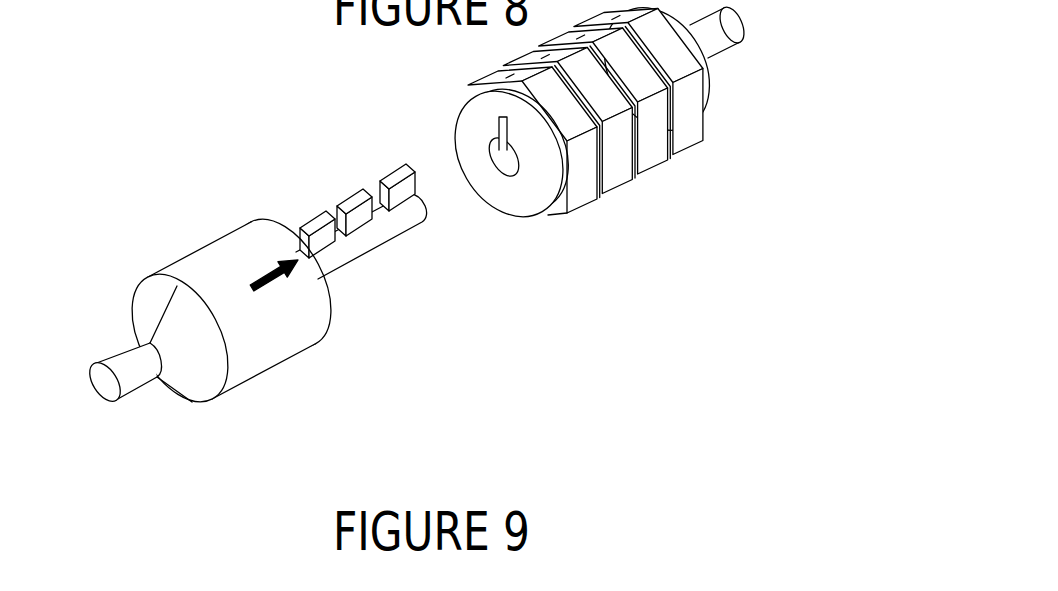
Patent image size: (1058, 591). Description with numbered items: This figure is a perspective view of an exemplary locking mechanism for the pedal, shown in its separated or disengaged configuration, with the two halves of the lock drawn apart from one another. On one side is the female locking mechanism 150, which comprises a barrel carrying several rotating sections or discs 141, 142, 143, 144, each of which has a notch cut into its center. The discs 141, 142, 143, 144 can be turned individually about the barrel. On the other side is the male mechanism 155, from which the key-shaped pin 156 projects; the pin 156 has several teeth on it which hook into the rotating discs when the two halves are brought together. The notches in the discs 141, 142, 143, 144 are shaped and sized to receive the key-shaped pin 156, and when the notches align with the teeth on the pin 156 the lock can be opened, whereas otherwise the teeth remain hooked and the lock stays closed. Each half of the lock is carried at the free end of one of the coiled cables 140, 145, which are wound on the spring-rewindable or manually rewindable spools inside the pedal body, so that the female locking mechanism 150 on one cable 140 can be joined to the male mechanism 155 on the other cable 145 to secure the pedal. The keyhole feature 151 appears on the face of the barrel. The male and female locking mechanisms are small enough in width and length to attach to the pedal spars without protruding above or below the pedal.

The coiled cable 140 is at (727, 33).
The rotating disc 141 is at (590, 197).
The rotating disc 142 is at (618, 176).
The rotating disc 143 is at (656, 153).
The rotating disc 144 is at (692, 134).
The coiled cable 145 is at (101, 382).
The female locking mechanism 150 is at (705, 104).
The keyhole 151 is at (505, 165).
The male locking mechanism 155 is at (267, 355).
The key-shaped pin 156 is at (381, 246).